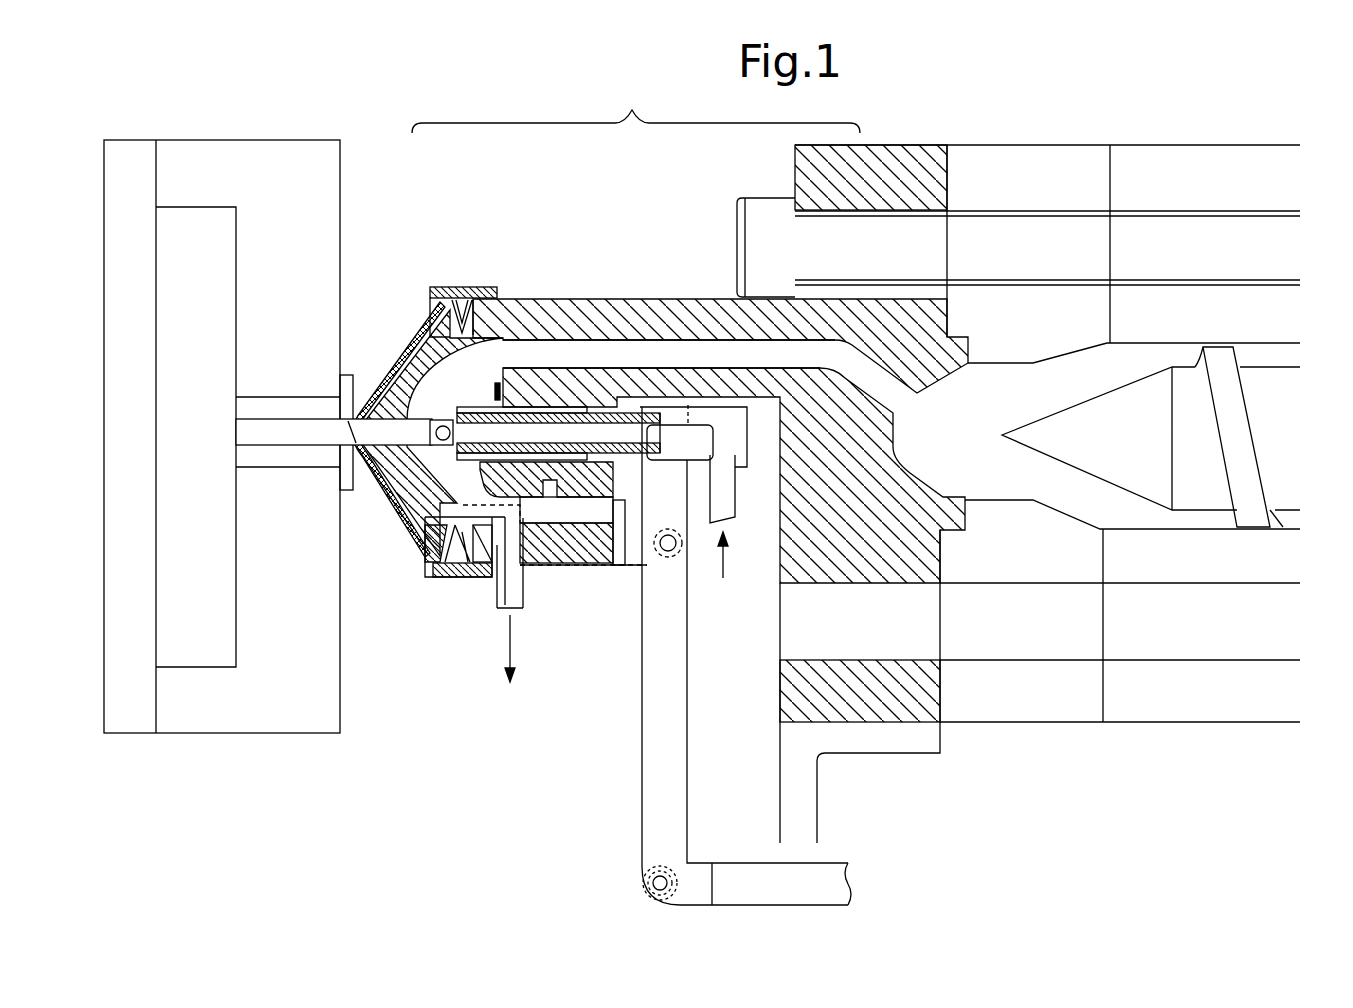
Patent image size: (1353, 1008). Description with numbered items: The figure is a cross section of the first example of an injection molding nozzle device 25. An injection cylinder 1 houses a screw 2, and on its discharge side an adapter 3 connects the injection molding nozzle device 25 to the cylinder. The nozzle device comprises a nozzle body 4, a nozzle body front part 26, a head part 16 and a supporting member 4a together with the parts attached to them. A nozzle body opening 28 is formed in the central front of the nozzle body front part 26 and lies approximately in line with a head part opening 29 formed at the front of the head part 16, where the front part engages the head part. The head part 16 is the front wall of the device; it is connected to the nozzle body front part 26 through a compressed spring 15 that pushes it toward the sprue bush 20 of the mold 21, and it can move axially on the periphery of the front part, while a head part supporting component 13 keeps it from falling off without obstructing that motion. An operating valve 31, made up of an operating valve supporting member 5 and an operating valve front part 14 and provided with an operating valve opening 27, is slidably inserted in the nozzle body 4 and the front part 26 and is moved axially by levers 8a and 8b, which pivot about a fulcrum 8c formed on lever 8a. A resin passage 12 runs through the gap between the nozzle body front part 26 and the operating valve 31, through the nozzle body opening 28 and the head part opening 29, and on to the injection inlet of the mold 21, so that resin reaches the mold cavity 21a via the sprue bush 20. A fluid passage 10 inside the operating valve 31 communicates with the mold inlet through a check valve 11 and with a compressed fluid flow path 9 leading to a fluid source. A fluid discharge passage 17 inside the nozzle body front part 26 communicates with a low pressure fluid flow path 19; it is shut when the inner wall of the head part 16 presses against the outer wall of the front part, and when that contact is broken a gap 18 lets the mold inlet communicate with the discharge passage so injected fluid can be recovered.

The injection cylinder 1 is at (1173, 707).
The screw 2 is at (1118, 468).
The adapter 3 is at (1047, 707).
The nozzle body 4 is at (646, 318).
The supporting member 4a is at (688, 377).
The operating valve supporting member 5 is at (515, 412).
The lever 8a is at (652, 758).
The lever 8b is at (698, 873).
The fulcrum 8c is at (655, 566).
The compressed fluid flow path 9 is at (730, 490).
The fluid passage 10 is at (538, 432).
The check valve 11 is at (447, 420).
The resin passage 12 is at (582, 348).
The head part supporting component 13 is at (468, 288).
The operating valve front part 14 is at (448, 452).
The compressed spring 15 is at (480, 564).
The head part 16 is at (410, 500).
The fluid discharge passage 17 is at (437, 578).
The gap 18 is at (417, 358).
The low pressure fluid flow path 19 is at (523, 605).
The sprue bush 20 is at (343, 377).
The mold 21 is at (307, 150).
The mold cavity 21a is at (188, 656).
The injection molding nozzle device 25 is at (636, 106).
The nozzle body front part 26 is at (420, 540).
The operating valve opening 27 is at (392, 470).
The nozzle body opening 28 is at (415, 432).
The head part opening 29 is at (349, 441).
The operating valve 31 is at (498, 382).